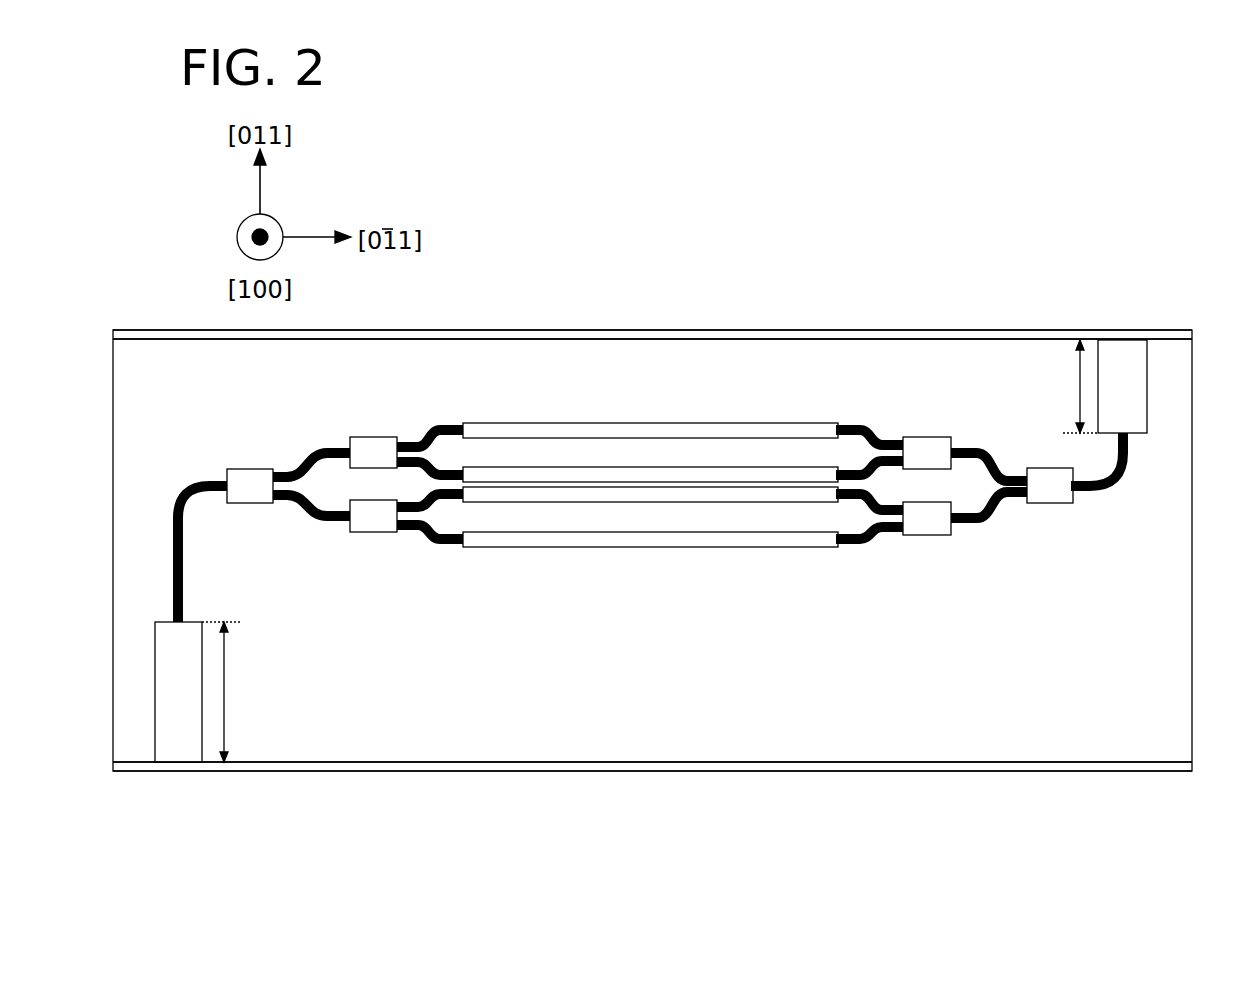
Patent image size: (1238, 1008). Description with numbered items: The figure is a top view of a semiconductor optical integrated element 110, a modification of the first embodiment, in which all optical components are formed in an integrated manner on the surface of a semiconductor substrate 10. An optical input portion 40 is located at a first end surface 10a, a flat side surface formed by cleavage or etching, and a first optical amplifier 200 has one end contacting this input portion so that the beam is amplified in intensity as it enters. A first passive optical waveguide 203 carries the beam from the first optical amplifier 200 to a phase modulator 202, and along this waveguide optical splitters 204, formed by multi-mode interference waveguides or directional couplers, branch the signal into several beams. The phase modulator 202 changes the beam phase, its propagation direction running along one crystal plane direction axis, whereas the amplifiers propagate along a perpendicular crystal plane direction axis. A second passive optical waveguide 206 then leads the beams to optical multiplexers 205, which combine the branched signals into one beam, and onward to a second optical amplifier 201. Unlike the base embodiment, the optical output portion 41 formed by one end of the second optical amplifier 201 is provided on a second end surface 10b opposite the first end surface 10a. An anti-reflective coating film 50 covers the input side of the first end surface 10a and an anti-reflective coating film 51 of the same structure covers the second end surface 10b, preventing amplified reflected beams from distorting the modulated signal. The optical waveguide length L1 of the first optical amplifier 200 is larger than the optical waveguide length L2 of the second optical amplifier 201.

The semiconductor optical integrated element 110 is at (738, 187).
The semiconductor substrate 10 is at (773, 730).
The first end surface 10a is at (682, 764).
The second end surface 10b is at (884, 339).
The anti-reflective coating film 50 is at (562, 767).
The anti-reflective coating film 51 is at (722, 334).
The optical input portion 40 is at (175, 770).
The optical output portion 41 is at (1130, 342).
The first optical amplifier 200 is at (198, 763).
The second optical amplifier 201 is at (1118, 365).
The phase modulator 202 is at (592, 540).
The first passive optical waveguide 203 is at (410, 537).
The optical splitters 204 is at (373, 518).
The optical multiplexers 205 is at (917, 517).
The second passive optical waveguide 206 is at (877, 537).
The optical waveguide length of the first optical amplifier L1 is at (233, 692).
The optical waveguide length of the second optical amplifier L2 is at (1066, 386).